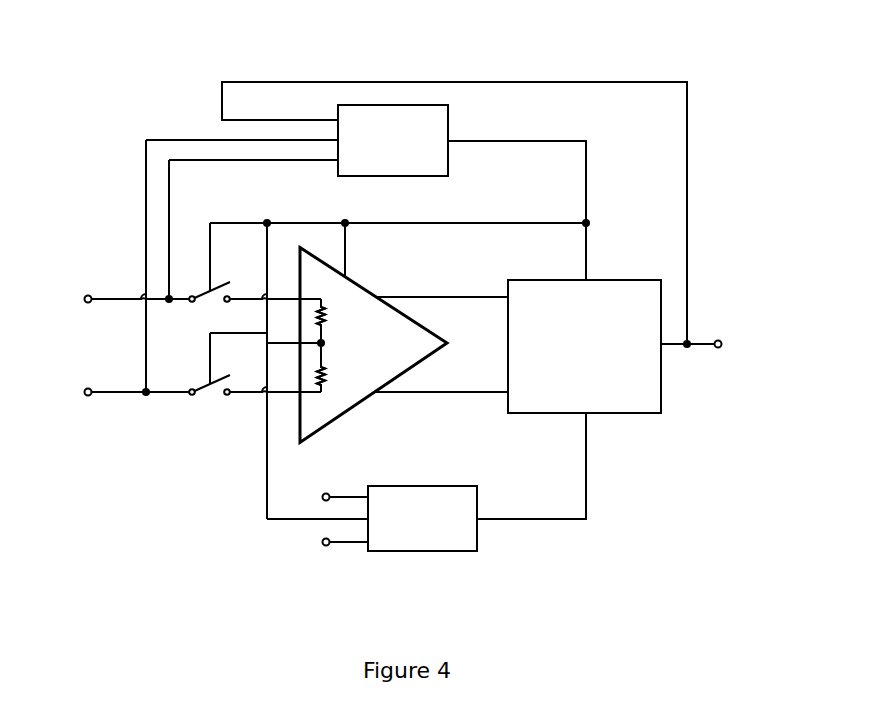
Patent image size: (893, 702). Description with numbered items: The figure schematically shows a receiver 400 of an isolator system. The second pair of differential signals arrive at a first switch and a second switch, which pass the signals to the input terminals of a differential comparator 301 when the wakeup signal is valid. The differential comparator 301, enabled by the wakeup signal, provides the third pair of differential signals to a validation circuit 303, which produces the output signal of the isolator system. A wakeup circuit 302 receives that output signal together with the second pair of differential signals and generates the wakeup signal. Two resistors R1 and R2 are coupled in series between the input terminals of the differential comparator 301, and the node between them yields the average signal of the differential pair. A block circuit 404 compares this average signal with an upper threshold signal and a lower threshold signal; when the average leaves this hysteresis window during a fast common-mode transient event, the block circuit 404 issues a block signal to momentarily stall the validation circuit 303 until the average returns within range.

The receiver 400 is at (664, 58).
The wakeup circuit 302 is at (393, 140).
The differential comparator 301 is at (373, 345).
The validation circuit 303 is at (584, 346).
The block circuit 404 is at (422, 518).
The resistor R1 is at (336, 318).
The resistor R2 is at (336, 378).